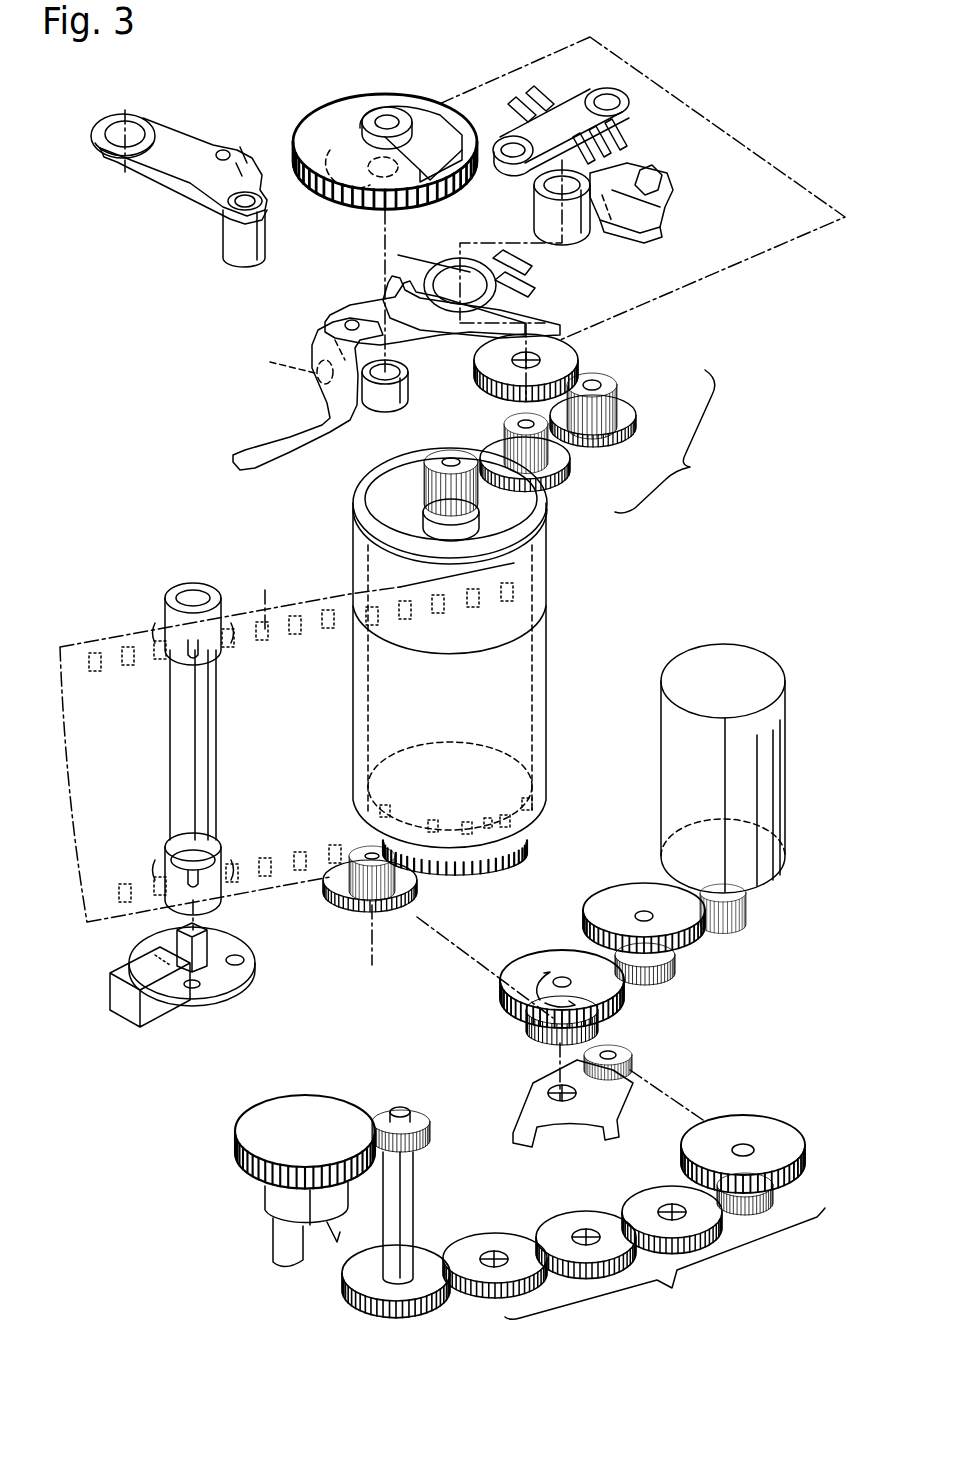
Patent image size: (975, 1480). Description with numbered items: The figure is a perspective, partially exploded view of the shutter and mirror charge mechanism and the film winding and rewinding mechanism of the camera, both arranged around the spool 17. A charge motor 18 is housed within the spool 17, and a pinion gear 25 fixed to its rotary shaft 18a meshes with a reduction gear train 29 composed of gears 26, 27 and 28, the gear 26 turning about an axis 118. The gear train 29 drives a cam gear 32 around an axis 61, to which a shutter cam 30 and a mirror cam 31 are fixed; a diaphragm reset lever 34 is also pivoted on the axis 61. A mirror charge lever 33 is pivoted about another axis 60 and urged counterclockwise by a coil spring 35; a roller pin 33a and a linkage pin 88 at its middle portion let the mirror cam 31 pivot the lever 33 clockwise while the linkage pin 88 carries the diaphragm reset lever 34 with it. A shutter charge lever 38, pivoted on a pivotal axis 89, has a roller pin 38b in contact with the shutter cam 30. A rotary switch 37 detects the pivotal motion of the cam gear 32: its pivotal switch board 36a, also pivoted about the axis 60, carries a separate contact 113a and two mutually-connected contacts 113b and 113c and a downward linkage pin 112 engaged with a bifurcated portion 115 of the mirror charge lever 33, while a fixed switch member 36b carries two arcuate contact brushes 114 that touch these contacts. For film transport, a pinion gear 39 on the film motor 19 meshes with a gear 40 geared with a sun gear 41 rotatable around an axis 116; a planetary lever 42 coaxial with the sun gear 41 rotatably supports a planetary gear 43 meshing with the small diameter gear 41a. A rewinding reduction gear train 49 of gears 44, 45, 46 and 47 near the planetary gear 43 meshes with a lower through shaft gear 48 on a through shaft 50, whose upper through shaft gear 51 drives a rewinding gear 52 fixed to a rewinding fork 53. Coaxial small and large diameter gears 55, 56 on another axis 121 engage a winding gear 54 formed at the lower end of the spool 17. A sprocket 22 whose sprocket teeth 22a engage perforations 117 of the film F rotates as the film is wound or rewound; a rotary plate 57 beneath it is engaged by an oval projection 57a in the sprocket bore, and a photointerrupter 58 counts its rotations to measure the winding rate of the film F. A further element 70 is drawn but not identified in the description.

The spool 17 is at (548, 567).
The charge motor 18 is at (358, 506).
The rotary shaft 18a is at (423, 518).
The film motor 19 is at (772, 738).
The sprocket 22 is at (180, 590).
The sprocket teeth 22a is at (228, 845).
The pinion gear 25 is at (450, 448).
The gear 26 is at (562, 479).
The gear 27 is at (632, 437).
The gear 28 is at (580, 360).
The reduction gear train 29 is at (668, 441).
The shutter cam 30 is at (380, 152).
The mirror cam 31 is at (350, 177).
The cam gear 32 is at (322, 192).
The mirror charge lever 33 is at (275, 428).
The roller pin 33a is at (395, 356).
The diaphragm reset lever 34 is at (325, 322).
The coil spring 35 is at (430, 258).
The pivotal switch board 36a is at (222, 238).
The fixed switch member 36b is at (617, 100).
The rotary switch 37 is at (603, 96).
The shutter charge lever 38 is at (145, 112).
The roller pin 38b is at (243, 165).
The pinion gear 39 is at (748, 905).
The gear 40 is at (703, 940).
The sun gear 41 is at (622, 1012).
The small diameter gear 41a is at (602, 1032).
The planetary lever 42 is at (530, 1112).
The planetary gear 43 is at (632, 1055).
The gear 44 is at (782, 1115).
The gear 45 is at (648, 1192).
The gear 46 is at (560, 1218).
The gear 47 is at (500, 1240).
The lower through shaft gear 48 is at (420, 1260).
The rewinding reduction gear train 49 is at (665, 1270).
The through shaft 50 is at (415, 1175).
The upper through shaft gear 51 is at (432, 1127).
The rewinding gear 52 is at (237, 1147).
The rewinding fork 53 is at (275, 1235).
The winding gear 54 is at (518, 859).
The small diameter gear 55 is at (415, 882).
The large diameter gear 56 is at (350, 912).
The rotary plate 57 is at (240, 986).
The oval projection 57a is at (207, 940).
The photointerrupter 58 is at (112, 1004).
The axis 60 is at (512, 306).
The axis 61 is at (385, 283).
The cartridge bottom 70 is at (553, 779).
The linkage pin 88 is at (291, 362).
The pivotal axis 89 is at (120, 175).
The linkage pin 112 is at (532, 240).
The separate contact 113a is at (665, 208).
The contact 113b is at (652, 232).
The contact 113c is at (660, 175).
The arcuate contact brushes 114 is at (618, 142).
The bifurcated portion 115 is at (540, 272).
The axis 116 is at (560, 1063).
The perforations 117 is at (263, 596).
The axis 118 is at (555, 318).
The axis 121 is at (380, 950).
The film F is at (81, 640).